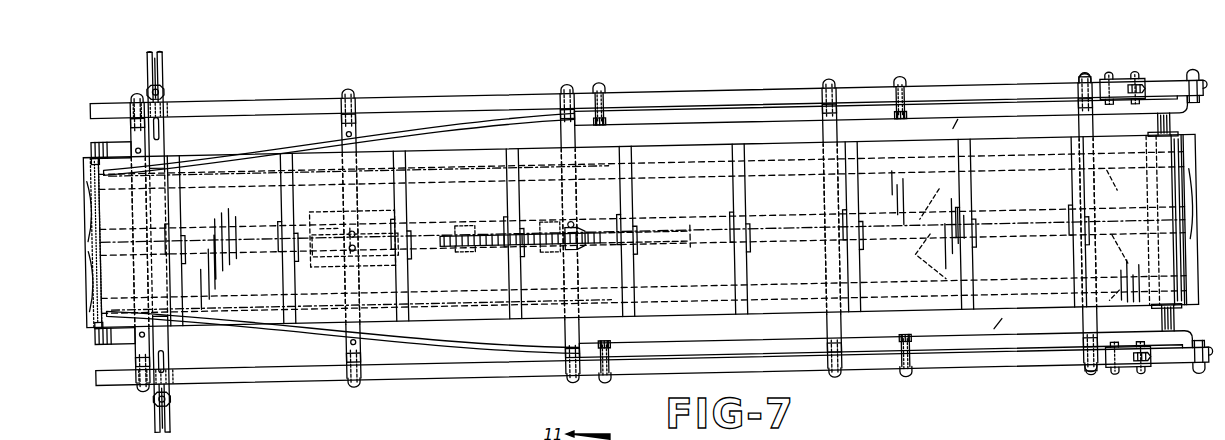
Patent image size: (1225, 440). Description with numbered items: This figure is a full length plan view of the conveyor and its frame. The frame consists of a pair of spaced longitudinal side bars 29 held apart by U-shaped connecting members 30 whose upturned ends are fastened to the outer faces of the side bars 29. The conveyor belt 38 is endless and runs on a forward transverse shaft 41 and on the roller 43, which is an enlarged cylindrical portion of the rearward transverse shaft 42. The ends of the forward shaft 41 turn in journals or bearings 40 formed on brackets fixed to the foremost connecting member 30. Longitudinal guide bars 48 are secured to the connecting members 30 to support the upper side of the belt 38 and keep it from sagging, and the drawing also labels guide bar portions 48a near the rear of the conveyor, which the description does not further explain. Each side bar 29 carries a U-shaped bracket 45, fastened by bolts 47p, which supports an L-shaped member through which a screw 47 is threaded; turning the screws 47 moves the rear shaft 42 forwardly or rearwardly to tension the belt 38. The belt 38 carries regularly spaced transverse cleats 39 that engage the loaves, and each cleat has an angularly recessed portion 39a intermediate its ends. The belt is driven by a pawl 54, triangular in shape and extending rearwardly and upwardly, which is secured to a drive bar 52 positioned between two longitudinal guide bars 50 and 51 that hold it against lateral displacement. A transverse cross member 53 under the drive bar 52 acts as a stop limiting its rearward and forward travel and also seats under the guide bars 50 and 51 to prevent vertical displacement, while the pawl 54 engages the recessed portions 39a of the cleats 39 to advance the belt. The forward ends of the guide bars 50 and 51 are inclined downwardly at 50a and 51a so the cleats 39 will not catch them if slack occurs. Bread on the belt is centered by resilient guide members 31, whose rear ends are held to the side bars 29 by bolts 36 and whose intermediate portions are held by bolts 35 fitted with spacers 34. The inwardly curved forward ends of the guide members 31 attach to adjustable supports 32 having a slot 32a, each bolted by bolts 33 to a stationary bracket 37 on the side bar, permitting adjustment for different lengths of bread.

The longitudinal side bar 29 is at (672, 96).
The U-shaped connecting member 30 is at (136, 86).
The guide member 31 is at (978, 224).
The adjustable support 32 is at (168, 132).
The slot 32a is at (167, 48).
The bolt 33 is at (168, 84).
The spacer 34 is at (612, 117).
The bolt 35 is at (608, 88).
The bolt 36 is at (1192, 85).
The stationary bracket 37 is at (167, 76).
The conveyor belt 38 is at (673, 230).
The cleat 39 is at (86, 178).
The angularly recessed portion 39a is at (88, 246).
The journal or bearing 40 is at (94, 132).
The forward transverse shaft 41 is at (92, 148).
The rearward transverse shaft 42 is at (1158, 135).
The roller 43 is at (1150, 145).
The U-shaped bracket 45 is at (1090, 382).
The screw 47 is at (1112, 84).
The bolt 47p is at (1140, 88).
The guide bar 48 is at (582, 239).
The spring end 48a is at (1134, 235).
The guide bar 50 is at (352, 226).
The downwardly inclined forward end 50a is at (334, 220).
The guide bar 51 is at (355, 269).
The downwardly inclined forward end 51a is at (335, 275).
The drive bar 52 is at (682, 238).
The cross member 53 is at (560, 220).
The pawl 54 is at (468, 222).